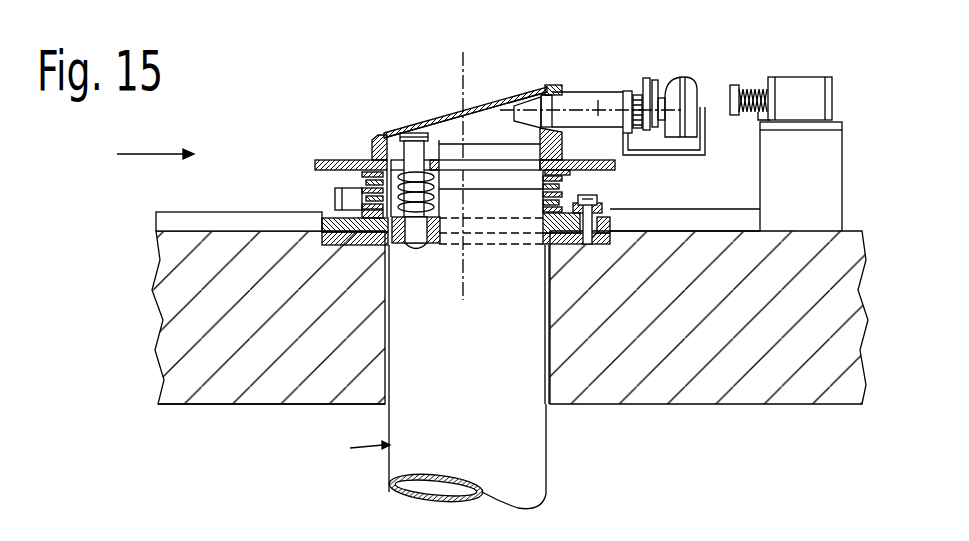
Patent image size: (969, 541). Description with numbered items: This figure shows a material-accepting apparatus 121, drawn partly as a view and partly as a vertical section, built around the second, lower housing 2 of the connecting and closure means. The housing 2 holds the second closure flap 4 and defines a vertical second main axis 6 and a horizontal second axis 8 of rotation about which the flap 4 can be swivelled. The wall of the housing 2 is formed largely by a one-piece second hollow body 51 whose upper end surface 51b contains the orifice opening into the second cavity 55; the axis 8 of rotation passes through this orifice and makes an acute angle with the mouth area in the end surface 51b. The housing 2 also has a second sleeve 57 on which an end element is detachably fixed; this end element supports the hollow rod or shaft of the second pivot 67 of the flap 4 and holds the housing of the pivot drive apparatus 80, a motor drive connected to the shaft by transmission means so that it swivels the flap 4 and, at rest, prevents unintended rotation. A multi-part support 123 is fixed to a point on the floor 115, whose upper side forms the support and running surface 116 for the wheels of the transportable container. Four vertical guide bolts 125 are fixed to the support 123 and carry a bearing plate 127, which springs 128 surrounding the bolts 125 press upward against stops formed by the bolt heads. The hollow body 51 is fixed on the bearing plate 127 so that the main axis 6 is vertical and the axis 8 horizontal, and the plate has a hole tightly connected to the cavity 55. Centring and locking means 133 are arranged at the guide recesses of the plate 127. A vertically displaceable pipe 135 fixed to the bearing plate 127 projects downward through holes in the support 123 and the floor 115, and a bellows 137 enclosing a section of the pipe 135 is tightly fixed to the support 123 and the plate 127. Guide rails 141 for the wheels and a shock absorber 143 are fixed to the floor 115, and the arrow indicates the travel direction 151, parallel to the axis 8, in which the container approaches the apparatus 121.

The second, lower housing 2 is at (372, 150).
The second closure flap 4 is at (452, 133).
The second main axis 6 is at (467, 72).
The second axis of rotation 8 is at (605, 97).
The second hollow body 51 is at (562, 136).
The upper end surface 51b is at (547, 98).
The second cavity 55 is at (450, 125).
The second sleeve 57 is at (624, 90).
The second pivot 67 is at (519, 106).
The pivot drive apparatus 80 is at (697, 80).
The floor 115 is at (200, 257).
The support and running surface 116 is at (243, 230).
The material-accepting apparatus 121 is at (347, 448).
The multi-part support 123 is at (333, 220).
The vertical guide bolts 125 is at (413, 147).
The bearing plate 127 is at (340, 190).
The springs 128 is at (445, 225).
The centring and locking means 133 is at (342, 196).
The vertically displaceable pipe 135 is at (547, 443).
The bellows 137 is at (558, 200).
The guide rails 141 is at (155, 227).
The shock absorber 143 is at (785, 76).
The travel direction 151 is at (167, 153).